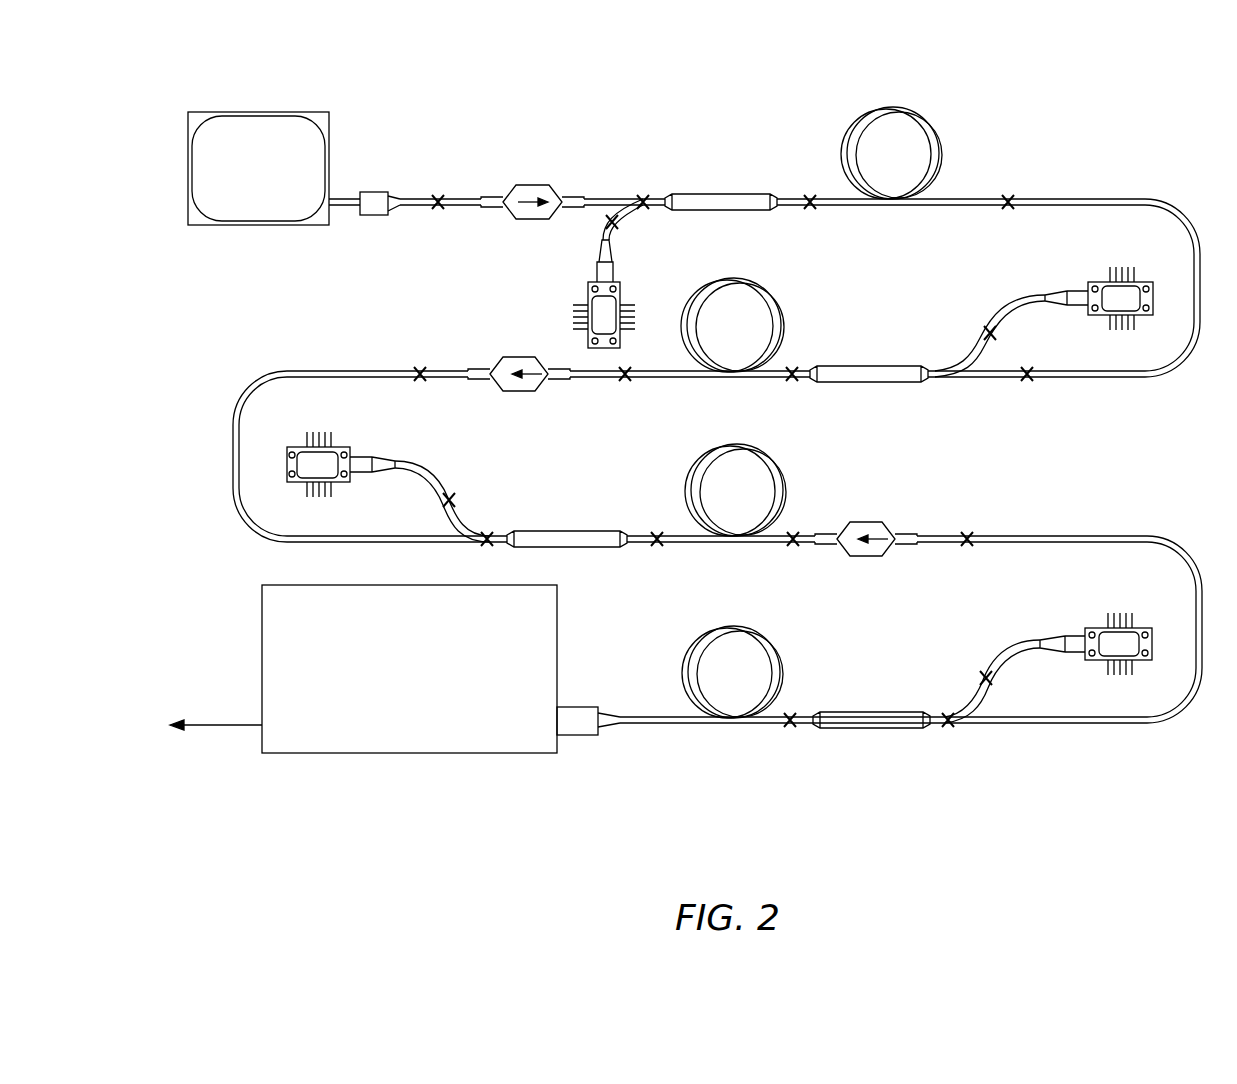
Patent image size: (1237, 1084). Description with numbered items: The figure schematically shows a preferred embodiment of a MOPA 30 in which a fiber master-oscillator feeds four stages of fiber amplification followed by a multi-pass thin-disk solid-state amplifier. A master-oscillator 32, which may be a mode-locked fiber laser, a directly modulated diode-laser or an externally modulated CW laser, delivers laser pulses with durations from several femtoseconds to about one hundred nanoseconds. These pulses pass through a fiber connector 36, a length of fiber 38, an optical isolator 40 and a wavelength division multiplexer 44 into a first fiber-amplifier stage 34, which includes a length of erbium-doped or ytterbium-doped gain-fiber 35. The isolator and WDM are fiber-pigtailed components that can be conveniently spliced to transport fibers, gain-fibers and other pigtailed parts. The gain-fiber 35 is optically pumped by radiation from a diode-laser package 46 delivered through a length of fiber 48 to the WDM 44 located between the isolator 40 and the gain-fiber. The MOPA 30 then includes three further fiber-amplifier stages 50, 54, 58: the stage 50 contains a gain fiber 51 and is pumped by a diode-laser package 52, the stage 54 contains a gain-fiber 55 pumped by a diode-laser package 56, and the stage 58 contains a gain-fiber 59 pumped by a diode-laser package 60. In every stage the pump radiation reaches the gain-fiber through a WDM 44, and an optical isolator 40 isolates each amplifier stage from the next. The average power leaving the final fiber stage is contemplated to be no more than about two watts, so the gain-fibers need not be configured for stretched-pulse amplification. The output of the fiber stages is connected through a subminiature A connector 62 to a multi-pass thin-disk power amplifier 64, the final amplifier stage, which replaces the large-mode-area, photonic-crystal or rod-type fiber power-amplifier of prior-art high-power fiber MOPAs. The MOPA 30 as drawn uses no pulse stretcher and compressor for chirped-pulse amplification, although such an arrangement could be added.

The MOPA 30 is at (952, 836).
The master-oscillator 32 is at (258, 232).
The first fiber-amplifier stage 34 is at (968, 140).
The gain-fiber 35 is at (832, 205).
The fiber connector 36 is at (380, 215).
The length of fiber 38 is at (434, 195).
The optical isolator 40 is at (550, 184).
The wavelength division multiplexer 44 is at (732, 192).
The diode-laser package 46 is at (577, 296).
The length of fiber 48 is at (622, 214).
The fiber-amplifier stage 50 is at (805, 320).
The gain fiber 51 is at (662, 380).
The diode-laser package 52 is at (1085, 272).
The fiber-amplifier stage 54 is at (806, 484).
The gain-fiber 55 is at (680, 542).
The diode-laser package 56 is at (365, 432).
The fiber-amplifier stage 58 is at (800, 634).
The gain-fiber 59 is at (779, 724).
The diode-laser package 60 is at (1062, 616).
The SMA connector 62 is at (578, 707).
The multi-pass thin-disk power amplifier 64 is at (494, 756).